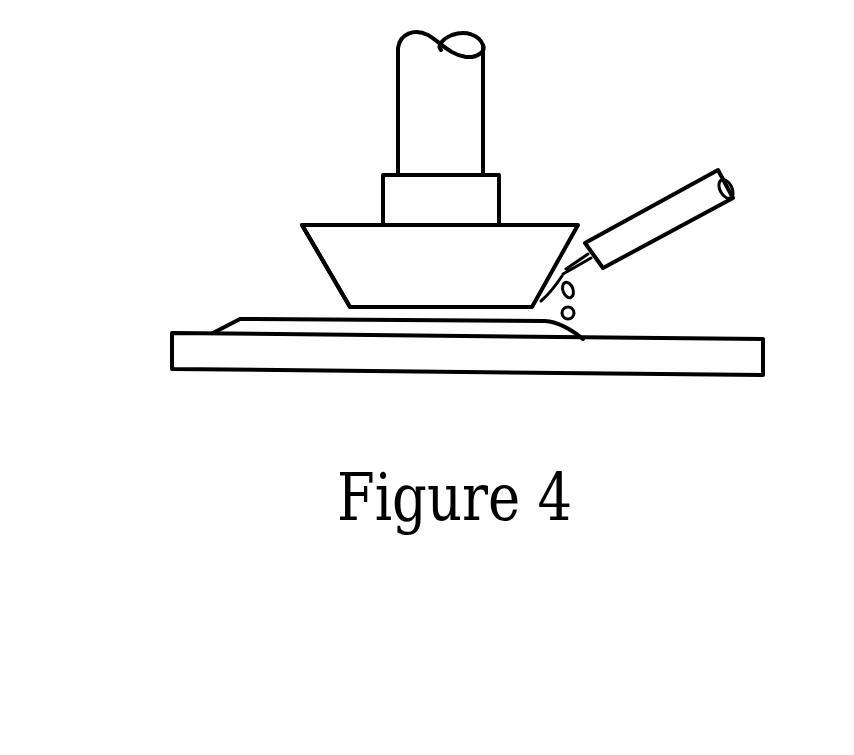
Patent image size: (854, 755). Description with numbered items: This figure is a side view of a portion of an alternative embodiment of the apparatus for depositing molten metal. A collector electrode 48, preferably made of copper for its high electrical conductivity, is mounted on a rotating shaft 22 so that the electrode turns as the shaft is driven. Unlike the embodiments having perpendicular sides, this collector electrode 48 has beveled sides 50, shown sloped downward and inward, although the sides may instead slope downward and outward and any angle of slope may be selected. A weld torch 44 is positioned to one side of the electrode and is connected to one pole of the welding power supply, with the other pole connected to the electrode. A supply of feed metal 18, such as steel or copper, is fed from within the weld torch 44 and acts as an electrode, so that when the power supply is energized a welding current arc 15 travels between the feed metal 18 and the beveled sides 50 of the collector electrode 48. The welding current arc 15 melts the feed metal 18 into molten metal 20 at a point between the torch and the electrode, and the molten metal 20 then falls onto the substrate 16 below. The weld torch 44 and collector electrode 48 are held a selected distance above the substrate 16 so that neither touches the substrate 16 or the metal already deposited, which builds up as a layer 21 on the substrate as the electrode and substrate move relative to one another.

The rotating shaft 22 is at (417, 72).
The collector electrode 48 is at (517, 243).
The beveled sides 50 is at (312, 247).
The weld torch 44 is at (695, 205).
The feed metal 18 is at (575, 265).
The welding current arc 15 is at (576, 281).
The molten metal 20 is at (578, 314).
The substrate 16 is at (192, 352).
The coating layer 21 is at (278, 325).